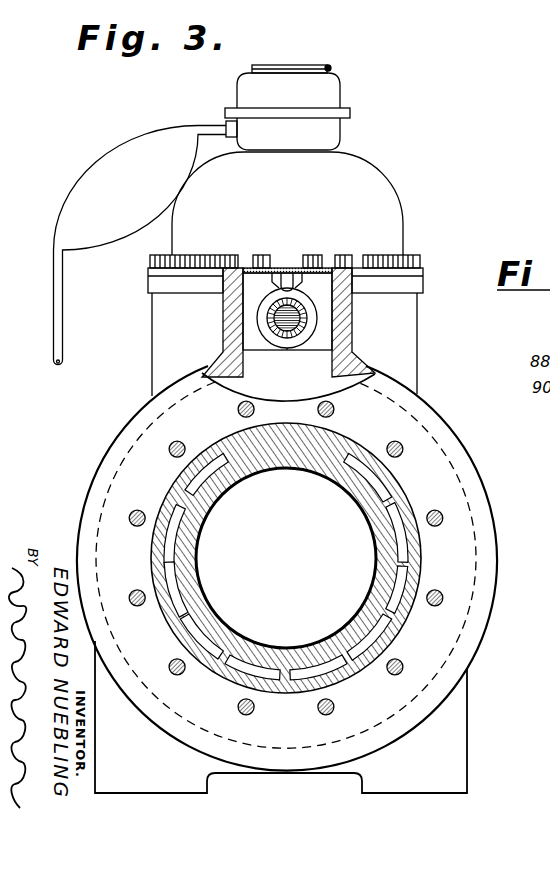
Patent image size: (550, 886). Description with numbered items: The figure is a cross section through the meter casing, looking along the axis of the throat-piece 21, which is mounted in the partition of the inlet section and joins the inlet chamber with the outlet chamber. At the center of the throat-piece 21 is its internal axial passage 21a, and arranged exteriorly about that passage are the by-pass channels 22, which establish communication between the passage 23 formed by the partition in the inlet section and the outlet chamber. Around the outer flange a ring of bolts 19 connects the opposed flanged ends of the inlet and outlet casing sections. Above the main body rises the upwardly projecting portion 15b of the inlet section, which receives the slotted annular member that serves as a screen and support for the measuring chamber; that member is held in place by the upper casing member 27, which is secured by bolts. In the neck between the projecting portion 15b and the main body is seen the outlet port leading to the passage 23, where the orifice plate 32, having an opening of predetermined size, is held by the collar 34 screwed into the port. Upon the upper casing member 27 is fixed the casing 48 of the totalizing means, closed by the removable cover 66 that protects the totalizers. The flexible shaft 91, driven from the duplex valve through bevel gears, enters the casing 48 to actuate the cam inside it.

The cover 66 is at (332, 86).
The casing 48 is at (322, 134).
The upper casing member 27 is at (403, 198).
The flexible shaft 91 is at (54, 238).
The upwardly projecting portion of the inlet section 15b is at (410, 308).
The orifice plate 32 is at (262, 318).
The passage 23 is at (336, 392).
The collar 34 is at (311, 347).
The bolts 19 is at (131, 510).
The throat-piece 21 is at (295, 558).
The internal axial passage 21a is at (330, 507).
The by-pass channels 22 is at (195, 627).